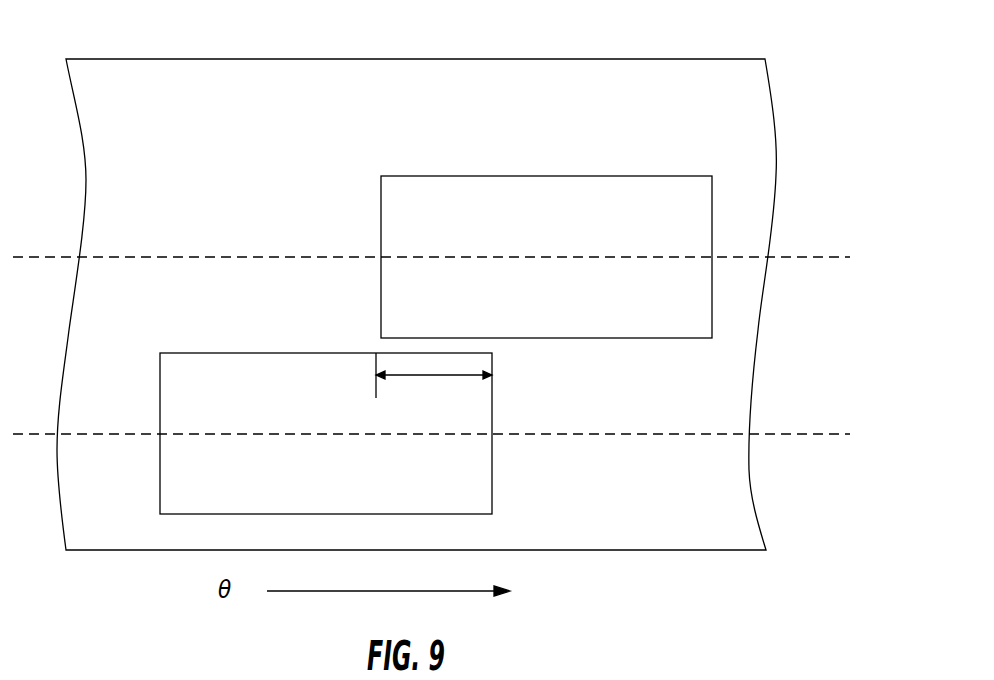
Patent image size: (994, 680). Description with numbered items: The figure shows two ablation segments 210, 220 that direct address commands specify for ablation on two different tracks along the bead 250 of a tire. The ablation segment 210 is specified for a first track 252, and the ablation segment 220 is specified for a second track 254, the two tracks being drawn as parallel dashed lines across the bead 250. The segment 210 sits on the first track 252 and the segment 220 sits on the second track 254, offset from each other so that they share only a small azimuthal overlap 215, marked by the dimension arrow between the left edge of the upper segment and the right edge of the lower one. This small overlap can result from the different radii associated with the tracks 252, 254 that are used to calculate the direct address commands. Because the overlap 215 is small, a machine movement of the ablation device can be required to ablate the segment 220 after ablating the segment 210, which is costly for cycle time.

The bead 250 is at (714, 78).
The second track 254 is at (165, 257).
The first track 252 is at (78, 434).
The ablation segment 220 is at (548, 183).
The ablation segment 210 is at (474, 466).
The azimuthal overlap 215 is at (430, 378).